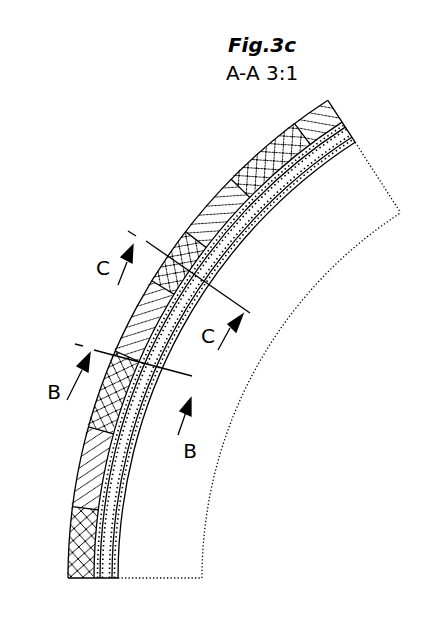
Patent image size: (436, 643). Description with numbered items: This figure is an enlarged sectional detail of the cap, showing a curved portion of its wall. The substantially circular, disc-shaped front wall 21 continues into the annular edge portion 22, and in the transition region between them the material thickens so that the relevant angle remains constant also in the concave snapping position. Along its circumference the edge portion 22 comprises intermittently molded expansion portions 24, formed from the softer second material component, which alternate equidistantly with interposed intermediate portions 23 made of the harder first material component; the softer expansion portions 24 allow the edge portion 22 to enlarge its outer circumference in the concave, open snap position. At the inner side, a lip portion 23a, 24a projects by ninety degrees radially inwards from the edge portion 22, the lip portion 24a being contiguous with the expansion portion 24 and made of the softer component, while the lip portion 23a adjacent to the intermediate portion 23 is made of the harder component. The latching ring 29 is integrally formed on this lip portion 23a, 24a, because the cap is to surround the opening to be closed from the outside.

The front wall 21 is at (162, 565).
The edge portion 22 is at (64, 584).
The intermediate portion 23 is at (190, 240).
The lip portion 23a is at (345, 121).
The expansion portion 24 is at (240, 178).
The lip portion 24a is at (278, 197).
The latching ring 29 is at (353, 136).